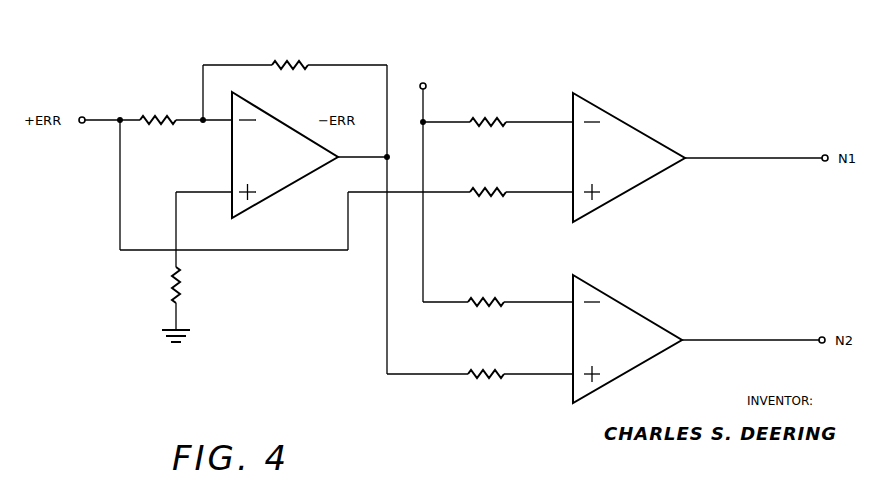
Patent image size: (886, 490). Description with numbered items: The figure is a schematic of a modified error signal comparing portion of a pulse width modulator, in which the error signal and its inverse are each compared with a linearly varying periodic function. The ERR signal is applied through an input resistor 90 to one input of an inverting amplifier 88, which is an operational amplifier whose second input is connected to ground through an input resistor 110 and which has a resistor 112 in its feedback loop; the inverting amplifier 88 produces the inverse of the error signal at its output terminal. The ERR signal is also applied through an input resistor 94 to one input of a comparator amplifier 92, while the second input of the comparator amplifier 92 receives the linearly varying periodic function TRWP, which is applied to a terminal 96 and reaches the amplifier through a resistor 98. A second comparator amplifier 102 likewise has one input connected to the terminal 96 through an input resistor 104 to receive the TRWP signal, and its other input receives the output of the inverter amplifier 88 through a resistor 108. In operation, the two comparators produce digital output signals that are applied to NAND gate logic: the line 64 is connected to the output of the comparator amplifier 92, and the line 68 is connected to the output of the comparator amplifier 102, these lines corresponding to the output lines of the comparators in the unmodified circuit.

The line 64 is at (722, 157).
The line 68 is at (715, 339).
The inverting amplifier 88 is at (284, 172).
The input resistor 90 is at (152, 114).
The comparator amplifier 92 is at (623, 181).
The input resistor 94 is at (484, 189).
The terminal 96 is at (426, 88).
The resistor 98 is at (485, 116).
The comparator amplifier 102 is at (623, 313).
The input resistor 104 is at (482, 297).
The resistor 108 is at (482, 369).
The input resistor 110 is at (183, 288).
The resistor 112 is at (288, 60).